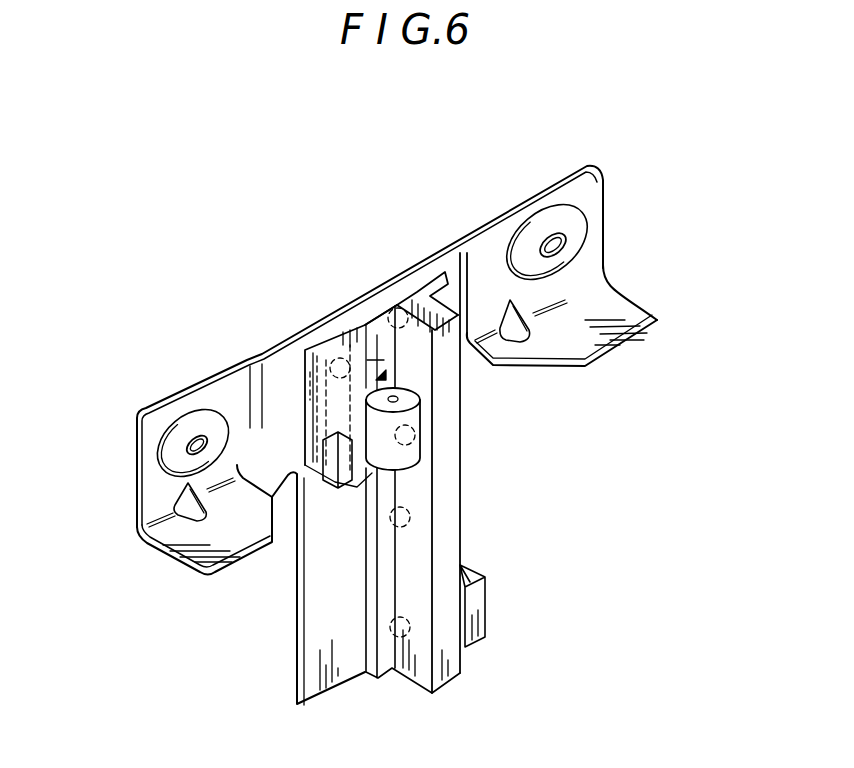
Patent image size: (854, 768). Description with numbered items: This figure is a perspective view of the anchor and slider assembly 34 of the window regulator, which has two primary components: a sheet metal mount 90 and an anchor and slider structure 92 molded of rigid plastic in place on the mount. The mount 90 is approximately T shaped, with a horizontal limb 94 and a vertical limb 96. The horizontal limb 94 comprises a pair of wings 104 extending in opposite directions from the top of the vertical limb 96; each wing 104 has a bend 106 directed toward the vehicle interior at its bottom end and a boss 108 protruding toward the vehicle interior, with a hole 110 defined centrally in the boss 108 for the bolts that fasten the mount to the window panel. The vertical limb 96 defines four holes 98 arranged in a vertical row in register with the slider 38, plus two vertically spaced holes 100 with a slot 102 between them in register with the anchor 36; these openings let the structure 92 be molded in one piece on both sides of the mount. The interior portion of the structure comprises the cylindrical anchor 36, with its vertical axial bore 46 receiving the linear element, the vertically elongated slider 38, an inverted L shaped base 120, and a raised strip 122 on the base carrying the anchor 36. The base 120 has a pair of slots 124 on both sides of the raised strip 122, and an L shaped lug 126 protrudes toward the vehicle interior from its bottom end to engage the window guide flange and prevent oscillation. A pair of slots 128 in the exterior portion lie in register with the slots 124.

The anchor and slider assembly 34 is at (292, 356).
The anchor 36 is at (412, 452).
The slider 38 is at (448, 545).
The axial bore 46 is at (420, 402).
The mount 90 is at (379, 363).
The anchor and slider structure 92 is at (384, 483).
The horizontal limb 94 is at (130, 510).
The vertical limb 96 is at (320, 620).
The holes 98 is at (392, 300).
The holes 100 is at (322, 352).
The slot 102 is at (362, 490).
The wings 104 is at (585, 188).
The bend 106 is at (622, 307).
The boss 108 is at (528, 253).
The hole 110 is at (552, 237).
The inverted L shaped base 120 is at (382, 328).
The raised strip 122 is at (384, 360).
The slots 124 is at (312, 437).
The L shaped lug 126 is at (473, 603).
The slots 128 is at (297, 383).